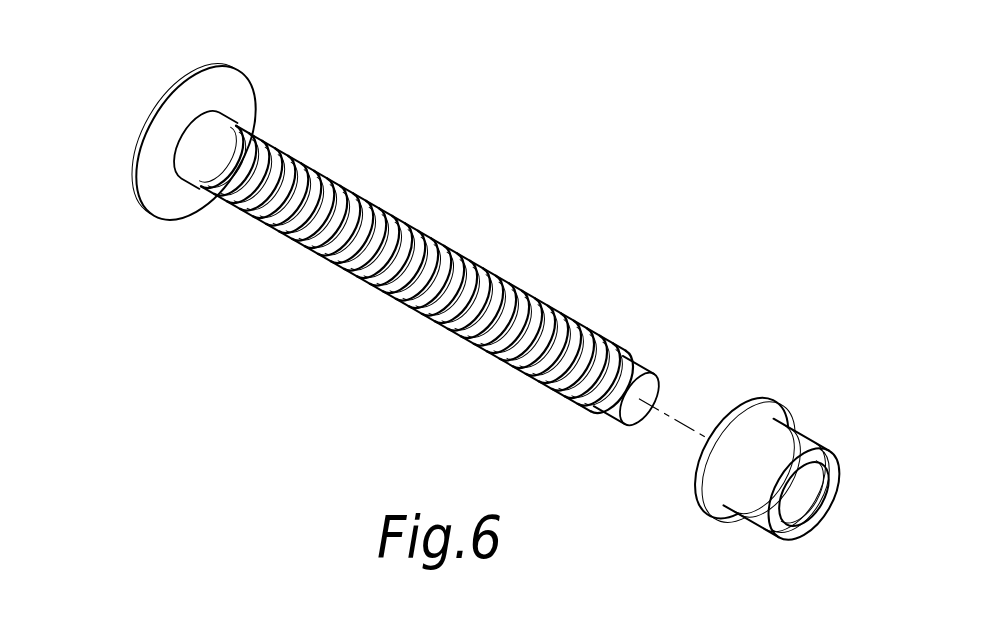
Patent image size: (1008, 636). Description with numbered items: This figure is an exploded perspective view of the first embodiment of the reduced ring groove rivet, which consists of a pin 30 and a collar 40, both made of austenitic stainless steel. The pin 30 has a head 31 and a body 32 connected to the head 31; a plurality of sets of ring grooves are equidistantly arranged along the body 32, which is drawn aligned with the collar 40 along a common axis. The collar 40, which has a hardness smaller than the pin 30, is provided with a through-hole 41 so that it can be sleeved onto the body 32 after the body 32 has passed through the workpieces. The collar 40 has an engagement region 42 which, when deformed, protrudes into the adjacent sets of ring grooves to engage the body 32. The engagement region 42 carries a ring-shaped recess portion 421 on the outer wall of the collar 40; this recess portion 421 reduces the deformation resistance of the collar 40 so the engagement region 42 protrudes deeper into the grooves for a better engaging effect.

The pin 30 is at (478, 198).
The head 31 is at (191, 82).
The body 32 is at (532, 295).
The collar 40 is at (838, 362).
The through-hole 41 is at (792, 503).
The engagement region 42 is at (858, 440).
The recess portion 421 is at (743, 498).